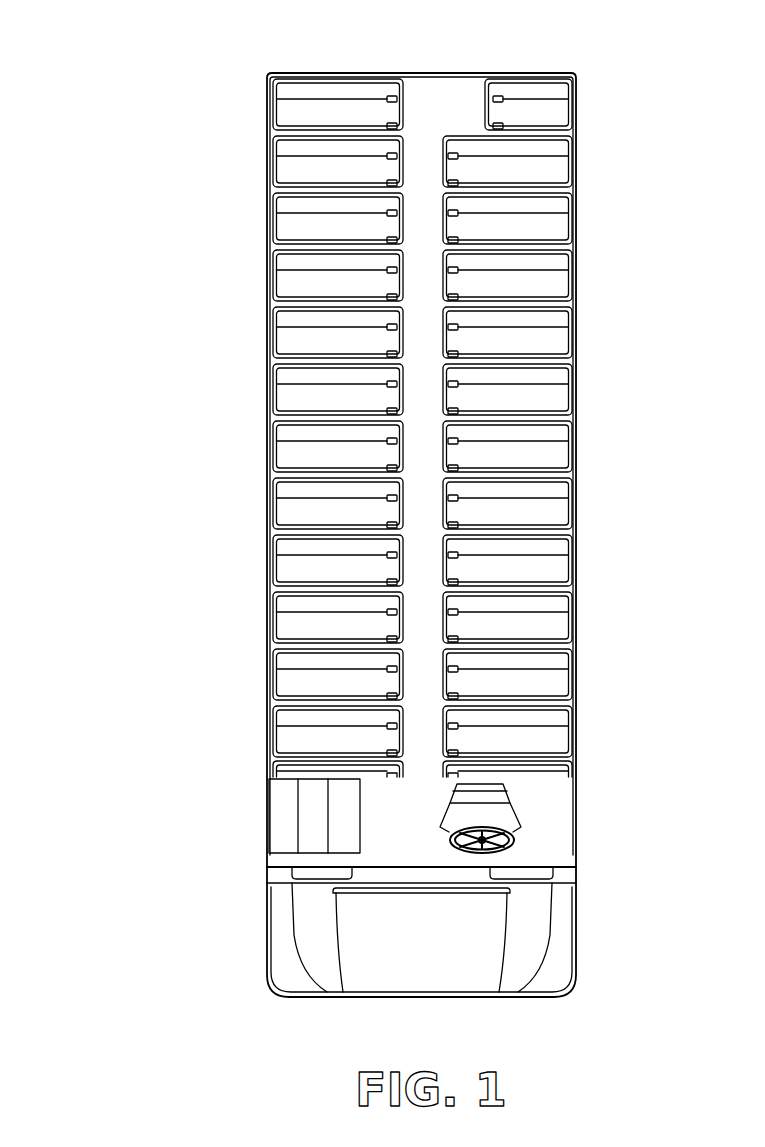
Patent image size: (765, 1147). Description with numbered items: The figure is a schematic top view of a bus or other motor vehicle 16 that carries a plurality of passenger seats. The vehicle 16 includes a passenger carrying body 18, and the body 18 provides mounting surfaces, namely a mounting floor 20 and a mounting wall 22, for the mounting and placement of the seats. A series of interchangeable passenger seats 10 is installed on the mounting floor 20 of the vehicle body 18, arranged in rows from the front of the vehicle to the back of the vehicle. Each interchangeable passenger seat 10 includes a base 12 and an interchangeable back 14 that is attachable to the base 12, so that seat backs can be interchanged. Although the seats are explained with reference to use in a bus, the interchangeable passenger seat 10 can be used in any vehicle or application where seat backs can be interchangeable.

The interchangeable passenger seat 10 is at (547, 562).
The base 12 is at (550, 620).
The interchangeable back 14 is at (553, 592).
The motor vehicle 16 is at (150, 186).
The passenger carrying body 18 is at (440, 75).
The mounting floor 20 is at (418, 95).
The mounting wall 22 is at (568, 696).